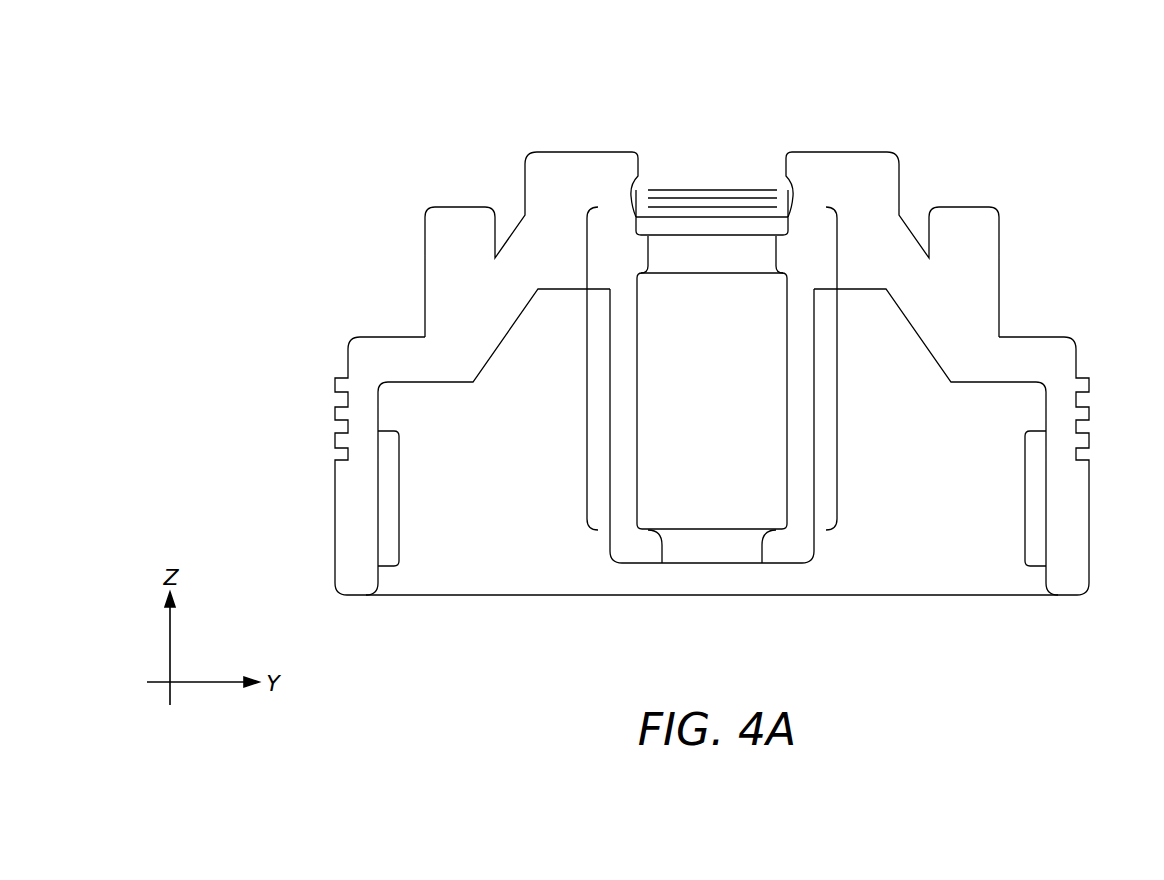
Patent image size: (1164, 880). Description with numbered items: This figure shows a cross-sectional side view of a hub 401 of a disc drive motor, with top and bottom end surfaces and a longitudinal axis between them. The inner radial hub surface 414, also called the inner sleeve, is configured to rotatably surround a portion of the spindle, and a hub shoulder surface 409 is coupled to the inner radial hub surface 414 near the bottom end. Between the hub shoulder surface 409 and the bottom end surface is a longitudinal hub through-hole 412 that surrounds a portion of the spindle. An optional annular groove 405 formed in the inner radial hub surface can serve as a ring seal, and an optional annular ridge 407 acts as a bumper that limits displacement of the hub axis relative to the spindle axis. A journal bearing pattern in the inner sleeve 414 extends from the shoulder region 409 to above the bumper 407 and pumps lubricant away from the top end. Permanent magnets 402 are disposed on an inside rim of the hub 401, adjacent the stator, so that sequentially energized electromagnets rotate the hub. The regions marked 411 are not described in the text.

The hub 401 is at (995, 105).
The permanent magnets 402 is at (348, 503).
The annular groove 405 is at (637, 200).
The annular ridge 407 is at (780, 252).
The hub shoulder surface 409 is at (776, 518).
The side channel region 411 is at (660, 605).
The longitudinal hub through-hole 412 is at (667, 605).
The inner radial hub surface 414 is at (577, 318).